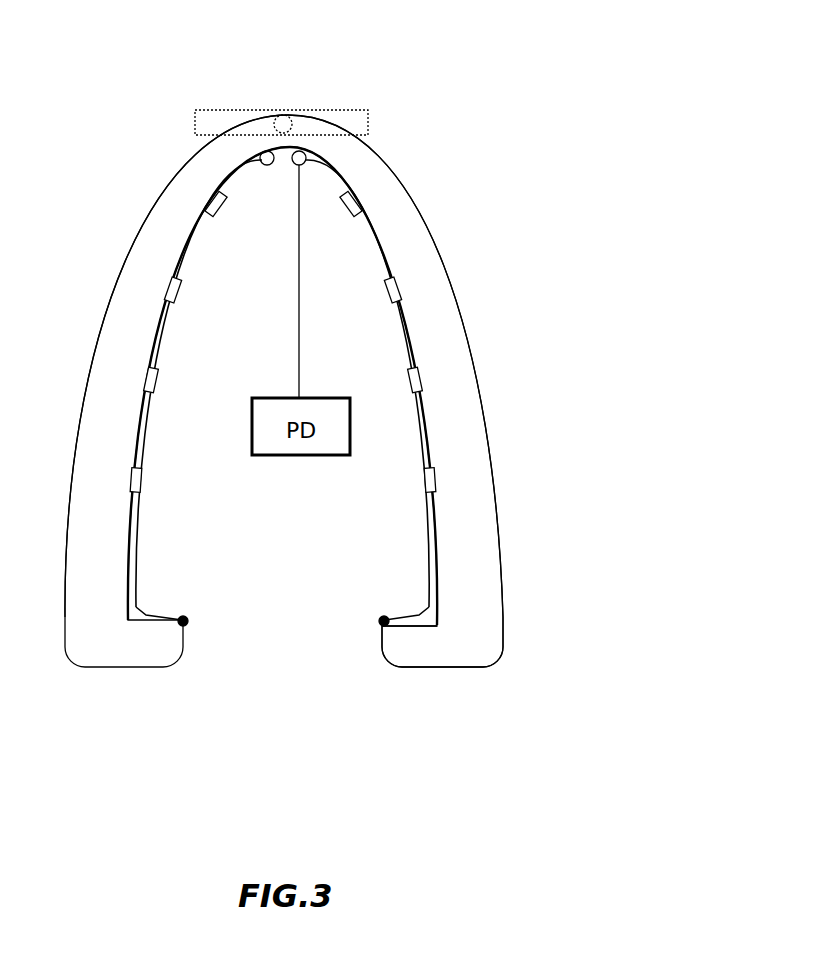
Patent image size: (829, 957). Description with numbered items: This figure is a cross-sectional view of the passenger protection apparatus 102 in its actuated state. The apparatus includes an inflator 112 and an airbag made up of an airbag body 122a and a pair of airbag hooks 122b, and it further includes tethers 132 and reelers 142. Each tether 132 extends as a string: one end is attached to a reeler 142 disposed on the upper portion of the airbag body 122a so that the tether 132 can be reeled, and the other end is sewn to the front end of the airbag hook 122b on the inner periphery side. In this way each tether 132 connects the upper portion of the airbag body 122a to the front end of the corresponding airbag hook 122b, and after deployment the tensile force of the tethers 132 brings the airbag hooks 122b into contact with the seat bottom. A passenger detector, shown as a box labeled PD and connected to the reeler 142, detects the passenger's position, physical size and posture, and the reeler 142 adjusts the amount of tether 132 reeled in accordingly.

The passenger protection apparatus 102 is at (437, 113).
The inflator 112 is at (292, 112).
The airbag body 122a is at (460, 500).
The airbag hook 122b is at (426, 644).
The tether 132 is at (372, 246).
The reeler 142 is at (296, 165).